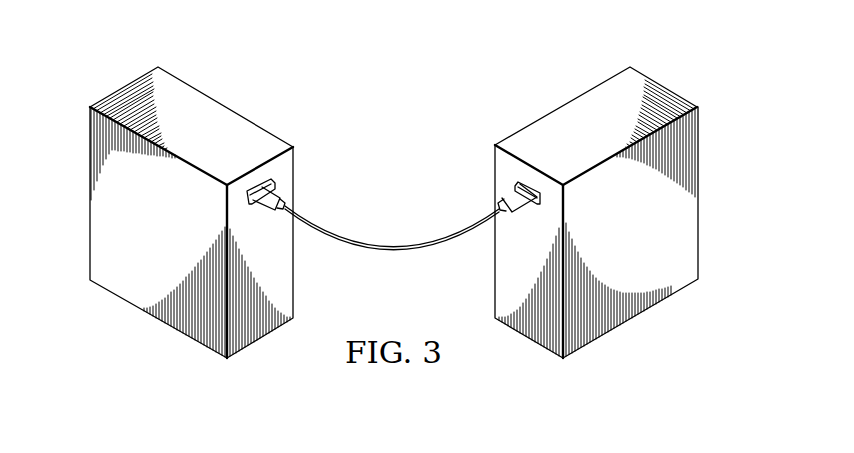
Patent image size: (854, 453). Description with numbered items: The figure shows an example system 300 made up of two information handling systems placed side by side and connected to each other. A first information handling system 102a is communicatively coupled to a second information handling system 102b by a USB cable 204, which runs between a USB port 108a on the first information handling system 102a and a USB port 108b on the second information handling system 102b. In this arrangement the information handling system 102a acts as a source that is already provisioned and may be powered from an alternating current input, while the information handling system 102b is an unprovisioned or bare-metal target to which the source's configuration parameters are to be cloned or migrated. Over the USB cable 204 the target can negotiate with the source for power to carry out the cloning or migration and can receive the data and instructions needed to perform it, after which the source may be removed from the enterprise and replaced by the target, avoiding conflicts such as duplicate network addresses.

The information handling system 102a is at (201, 108).
The information handling system 102b is at (578, 107).
The USB port 108a is at (276, 187).
The USB port 108b is at (516, 188).
The USB cable 204 is at (402, 250).
The system 300 is at (433, 72).